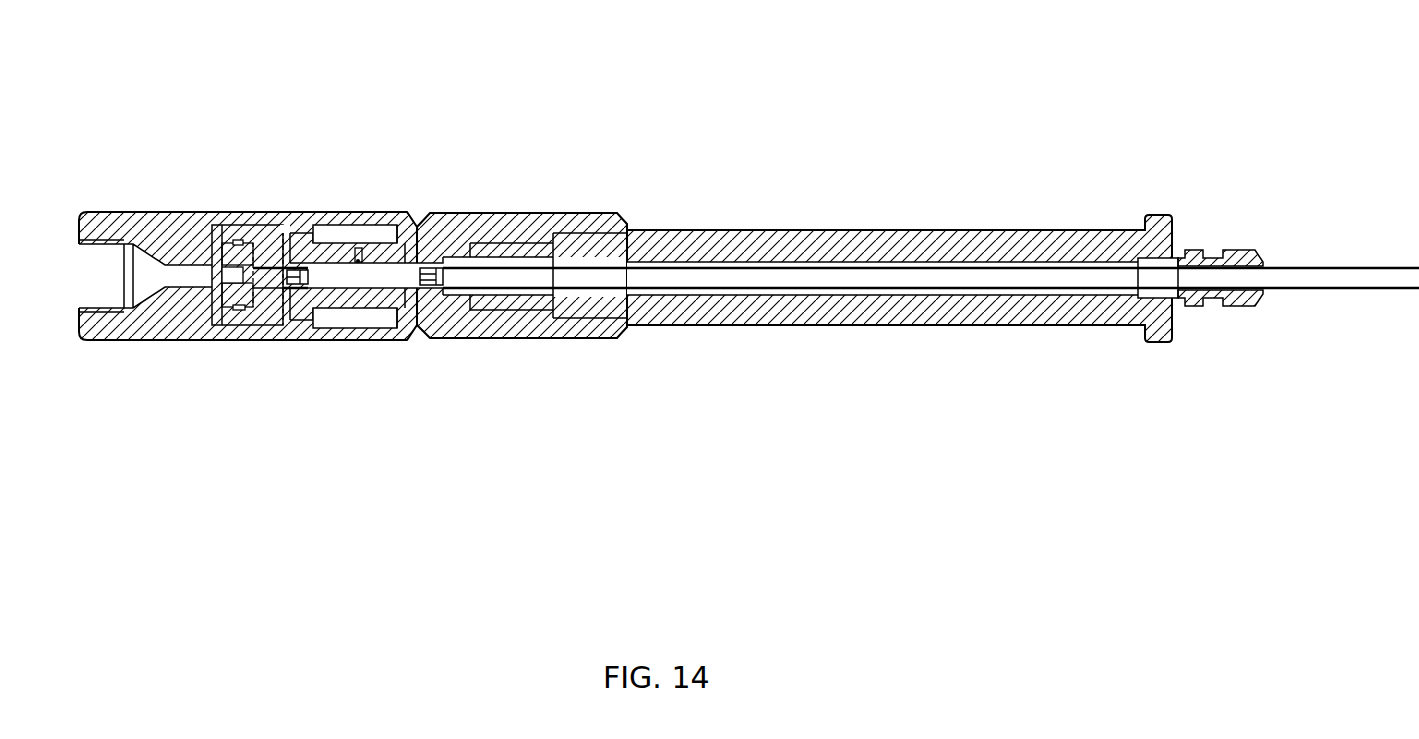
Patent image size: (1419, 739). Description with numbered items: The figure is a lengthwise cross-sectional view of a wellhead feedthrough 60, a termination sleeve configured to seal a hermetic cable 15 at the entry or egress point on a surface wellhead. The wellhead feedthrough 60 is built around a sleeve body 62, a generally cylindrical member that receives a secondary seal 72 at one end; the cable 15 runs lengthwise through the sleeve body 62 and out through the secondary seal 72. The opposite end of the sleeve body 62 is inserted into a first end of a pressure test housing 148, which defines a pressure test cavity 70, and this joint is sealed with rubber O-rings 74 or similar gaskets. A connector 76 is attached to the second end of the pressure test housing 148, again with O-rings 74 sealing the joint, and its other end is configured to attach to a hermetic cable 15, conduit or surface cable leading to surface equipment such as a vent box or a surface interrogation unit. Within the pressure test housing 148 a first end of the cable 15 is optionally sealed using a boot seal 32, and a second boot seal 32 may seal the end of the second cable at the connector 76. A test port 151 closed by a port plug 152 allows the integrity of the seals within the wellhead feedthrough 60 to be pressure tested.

The wellhead feedthrough 60 is at (744, 250).
The connector 76 is at (162, 342).
The O-rings 74 is at (224, 233).
The test port 151 is at (360, 262).
The port plug 152 is at (397, 245).
The pressure test housing 148 is at (514, 214).
The sleeve body 62 is at (748, 230).
The secondary seal 72 is at (1237, 250).
The hermetic cable 15 is at (1300, 280).
The boot seal 32 is at (283, 330).
The pressure test cavity 70 is at (353, 280).